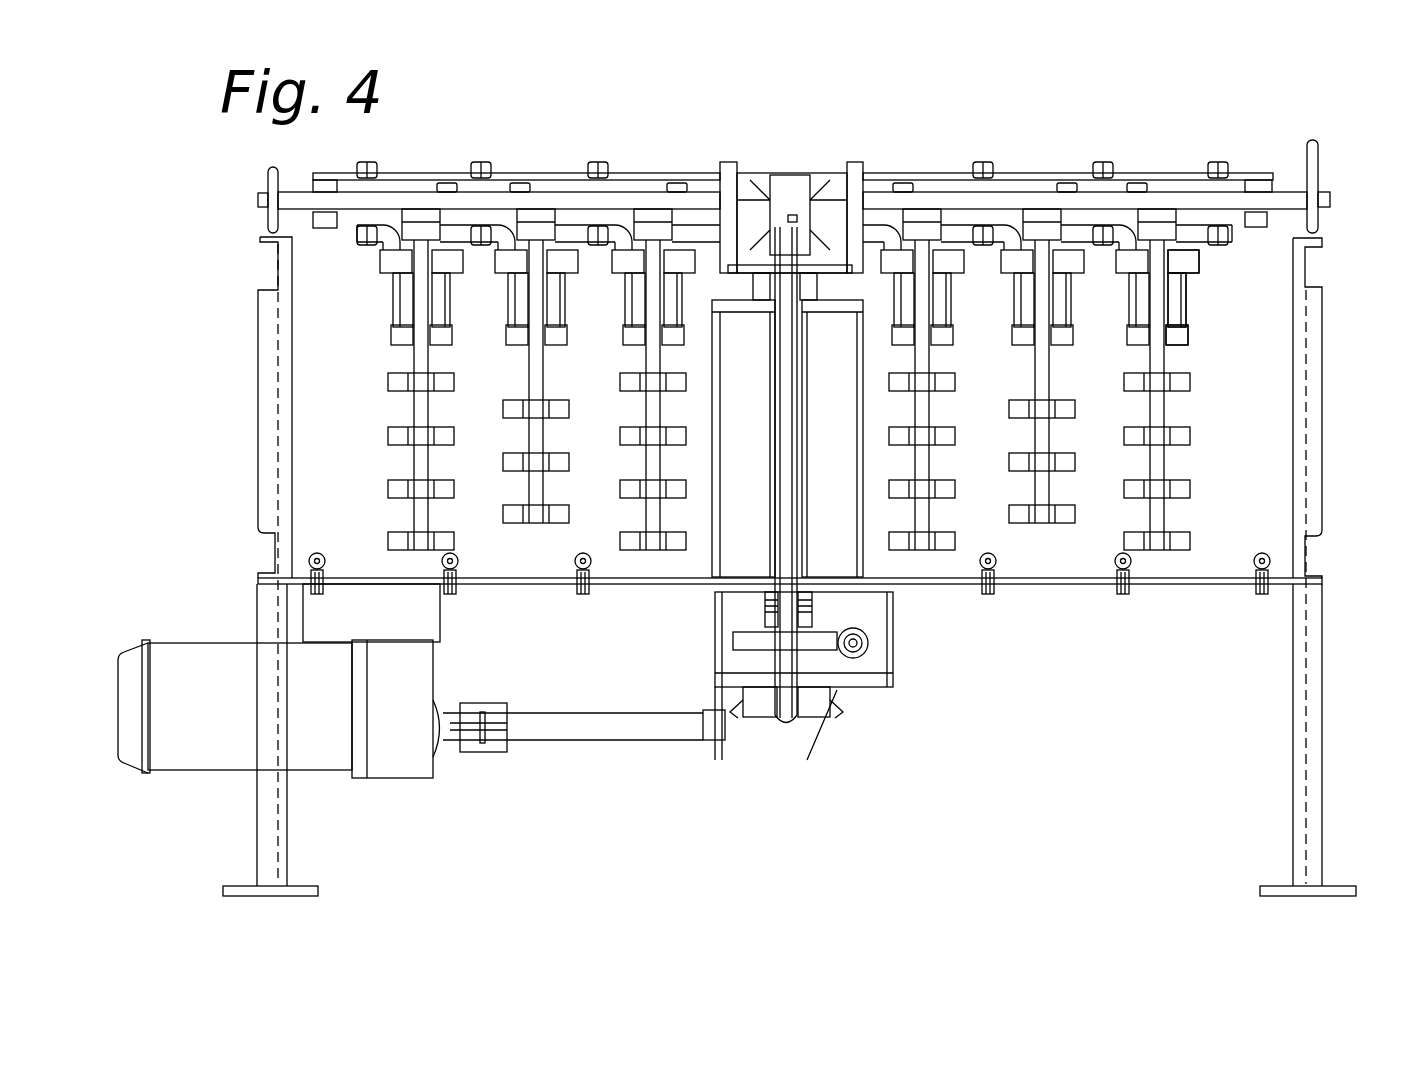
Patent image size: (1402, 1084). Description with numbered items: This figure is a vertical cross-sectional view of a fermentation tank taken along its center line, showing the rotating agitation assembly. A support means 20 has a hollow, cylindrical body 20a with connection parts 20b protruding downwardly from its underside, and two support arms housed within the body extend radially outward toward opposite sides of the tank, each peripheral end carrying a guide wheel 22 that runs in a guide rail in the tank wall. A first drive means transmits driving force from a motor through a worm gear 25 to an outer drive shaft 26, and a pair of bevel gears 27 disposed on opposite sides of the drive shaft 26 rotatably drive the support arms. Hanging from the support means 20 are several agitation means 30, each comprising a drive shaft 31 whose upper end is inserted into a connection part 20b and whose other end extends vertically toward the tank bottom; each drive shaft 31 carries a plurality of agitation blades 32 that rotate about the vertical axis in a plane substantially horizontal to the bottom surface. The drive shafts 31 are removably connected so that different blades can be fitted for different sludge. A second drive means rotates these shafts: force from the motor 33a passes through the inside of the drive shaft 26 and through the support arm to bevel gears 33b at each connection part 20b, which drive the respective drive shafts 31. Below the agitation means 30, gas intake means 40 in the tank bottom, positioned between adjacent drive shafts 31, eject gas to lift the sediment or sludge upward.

The support means 20 is at (1172, 148).
The hollow, cylindrical body 20a is at (1195, 175).
The connection part 20b is at (1195, 247).
The guide wheel 22 is at (268, 173).
The worm gear 25 is at (733, 642).
The outer drive shaft 26 is at (783, 503).
The bevel gears 27 is at (833, 212).
The agitation means 30 is at (1205, 438).
The drive shaft 31 is at (1164, 411).
The agitation blades 32 is at (1187, 489).
The motor 33a is at (410, 768).
The bevel gears 33b is at (1188, 277).
The gas intake means 40 is at (1000, 592).